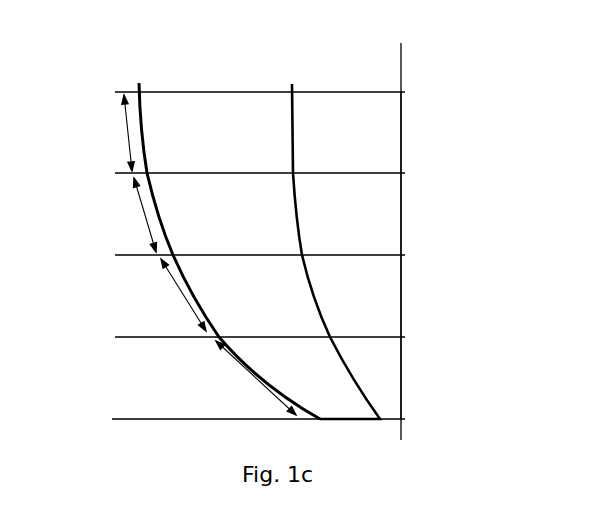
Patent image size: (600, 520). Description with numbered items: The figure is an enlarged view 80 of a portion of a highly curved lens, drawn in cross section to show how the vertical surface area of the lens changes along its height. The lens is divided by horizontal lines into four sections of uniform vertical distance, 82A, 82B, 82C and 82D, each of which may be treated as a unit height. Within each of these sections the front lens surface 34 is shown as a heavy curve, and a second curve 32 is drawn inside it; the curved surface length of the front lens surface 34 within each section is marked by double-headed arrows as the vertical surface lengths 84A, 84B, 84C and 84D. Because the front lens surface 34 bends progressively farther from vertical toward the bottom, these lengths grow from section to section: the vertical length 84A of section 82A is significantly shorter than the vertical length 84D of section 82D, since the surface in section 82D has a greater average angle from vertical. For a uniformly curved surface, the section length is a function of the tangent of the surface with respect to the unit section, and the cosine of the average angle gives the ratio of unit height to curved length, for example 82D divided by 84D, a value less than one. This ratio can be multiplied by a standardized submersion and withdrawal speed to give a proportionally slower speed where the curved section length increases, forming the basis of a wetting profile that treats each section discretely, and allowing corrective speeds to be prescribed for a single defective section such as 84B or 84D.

The enlarged view 80 is at (355, 46).
The front lens surface 34 is at (139, 92).
The second curve (profile) 32 is at (223, 117).
The vertical surface length of first section 84A is at (96, 133).
The vertical surface length of second section 84B is at (107, 215).
The vertical surface length of third section 84C is at (132, 295).
The vertical surface length of fourth section 84D is at (177, 378).
The first lens section 82A is at (432, 132).
The second lens section 82B is at (432, 214).
The third lens section 82C is at (432, 296).
The fourth lens section 82D is at (433, 378).